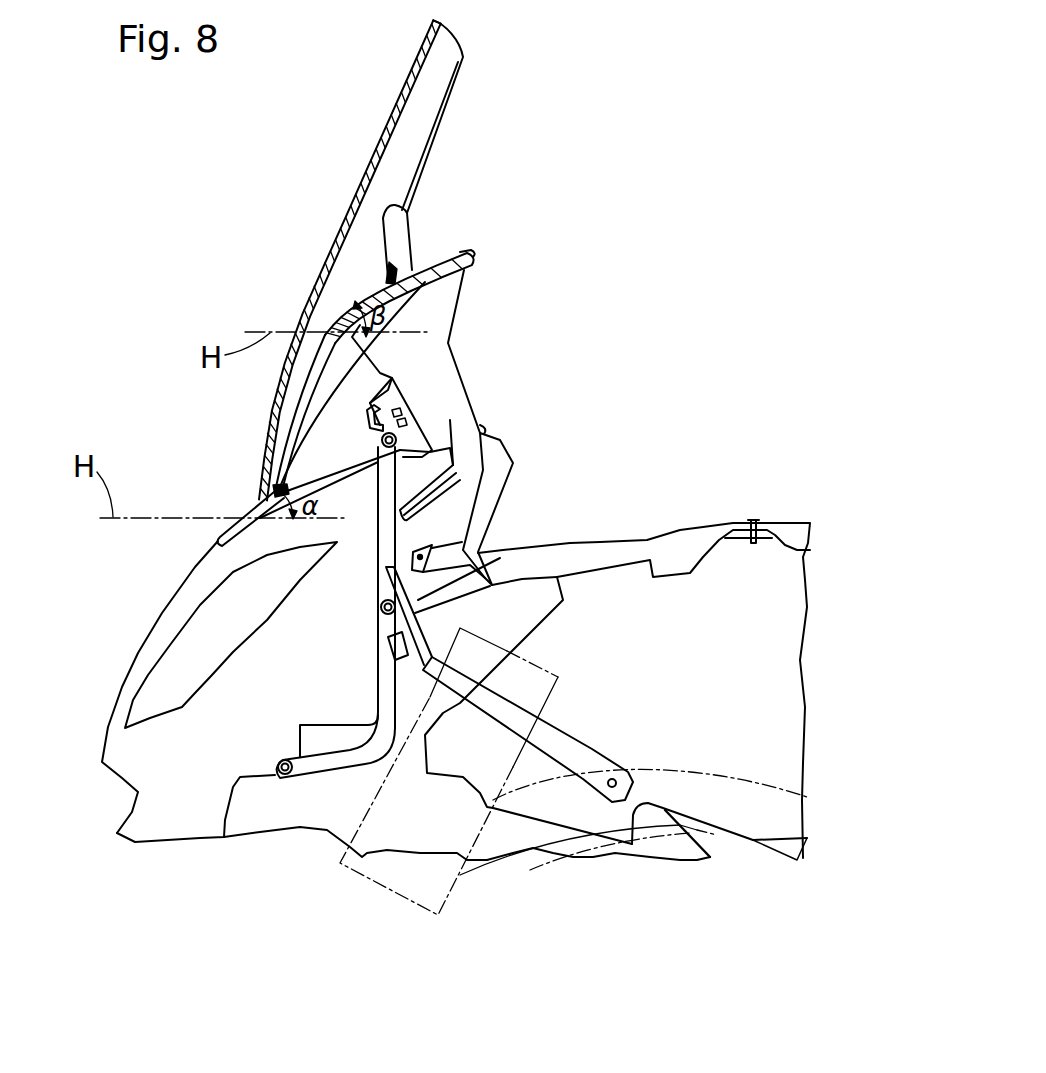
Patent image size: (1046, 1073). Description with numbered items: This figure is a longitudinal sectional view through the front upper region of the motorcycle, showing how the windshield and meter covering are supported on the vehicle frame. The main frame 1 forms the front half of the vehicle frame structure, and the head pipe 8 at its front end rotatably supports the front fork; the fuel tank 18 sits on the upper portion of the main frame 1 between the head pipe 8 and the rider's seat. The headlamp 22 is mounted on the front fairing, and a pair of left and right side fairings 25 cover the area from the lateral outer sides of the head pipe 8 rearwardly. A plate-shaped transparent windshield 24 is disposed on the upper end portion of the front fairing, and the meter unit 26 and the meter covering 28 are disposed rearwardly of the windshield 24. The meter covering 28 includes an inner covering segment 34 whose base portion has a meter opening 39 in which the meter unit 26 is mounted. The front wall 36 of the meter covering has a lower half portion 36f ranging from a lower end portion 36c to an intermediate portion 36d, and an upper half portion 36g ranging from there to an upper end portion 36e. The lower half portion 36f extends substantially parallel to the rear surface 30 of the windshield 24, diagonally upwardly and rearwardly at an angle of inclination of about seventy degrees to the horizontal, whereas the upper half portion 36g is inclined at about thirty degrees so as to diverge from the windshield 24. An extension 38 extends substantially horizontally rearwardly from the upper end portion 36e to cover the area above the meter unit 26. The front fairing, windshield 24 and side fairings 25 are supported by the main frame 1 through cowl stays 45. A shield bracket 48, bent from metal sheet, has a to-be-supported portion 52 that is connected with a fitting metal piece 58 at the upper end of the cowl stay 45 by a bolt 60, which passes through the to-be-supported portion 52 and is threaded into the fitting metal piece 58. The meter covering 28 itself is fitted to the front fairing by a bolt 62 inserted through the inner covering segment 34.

The main frame 1 is at (718, 835).
The head pipe 8 is at (340, 863).
The fuel tank 18 is at (776, 688).
The headlamp 22 is at (112, 762).
The windshield 24 is at (388, 128).
The side fairing 25 is at (280, 808).
The meter unit 26 is at (470, 393).
The meter covering 28 is at (464, 292).
The rear surface 30 is at (437, 88).
The inner covering segment 34 is at (492, 475).
The front wall 36 is at (350, 330).
The lower end portion 36c is at (258, 511).
The frame side portion 36d is at (323, 332).
The upper end portion 36e is at (447, 253).
The lower half portion 36f is at (308, 379).
The upper half portion 36g is at (405, 266).
The extension 38 is at (476, 257).
The meter opening 39 is at (486, 430).
The cowl stay 45 is at (380, 703).
The shield bracket 48 is at (398, 218).
The to-be-supported portion 52 is at (392, 392).
The fitting metal piece 58 is at (400, 418).
The bolt 60 is at (374, 401).
The bolt 62 is at (437, 551).